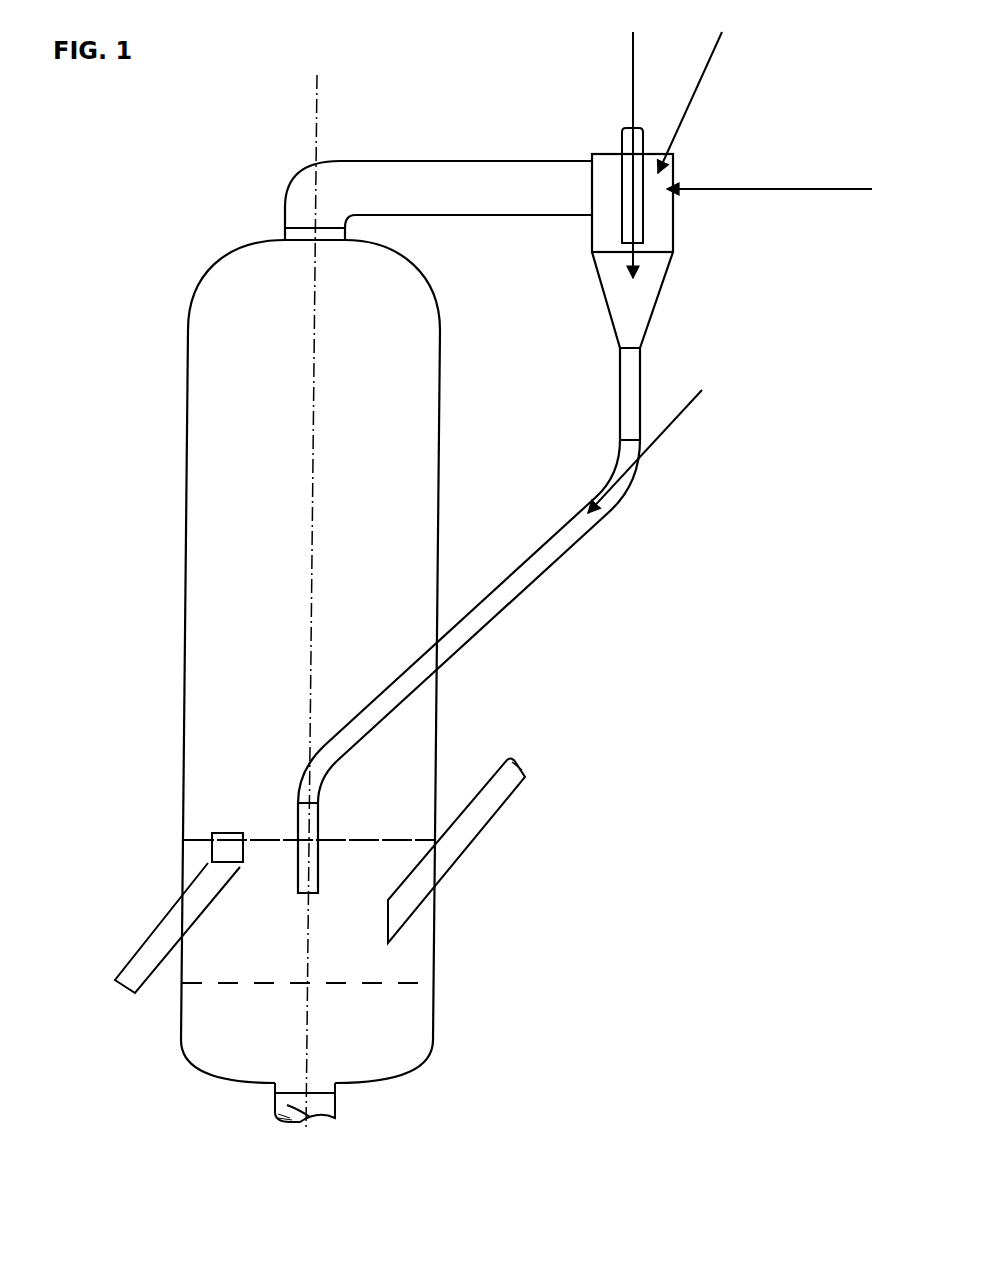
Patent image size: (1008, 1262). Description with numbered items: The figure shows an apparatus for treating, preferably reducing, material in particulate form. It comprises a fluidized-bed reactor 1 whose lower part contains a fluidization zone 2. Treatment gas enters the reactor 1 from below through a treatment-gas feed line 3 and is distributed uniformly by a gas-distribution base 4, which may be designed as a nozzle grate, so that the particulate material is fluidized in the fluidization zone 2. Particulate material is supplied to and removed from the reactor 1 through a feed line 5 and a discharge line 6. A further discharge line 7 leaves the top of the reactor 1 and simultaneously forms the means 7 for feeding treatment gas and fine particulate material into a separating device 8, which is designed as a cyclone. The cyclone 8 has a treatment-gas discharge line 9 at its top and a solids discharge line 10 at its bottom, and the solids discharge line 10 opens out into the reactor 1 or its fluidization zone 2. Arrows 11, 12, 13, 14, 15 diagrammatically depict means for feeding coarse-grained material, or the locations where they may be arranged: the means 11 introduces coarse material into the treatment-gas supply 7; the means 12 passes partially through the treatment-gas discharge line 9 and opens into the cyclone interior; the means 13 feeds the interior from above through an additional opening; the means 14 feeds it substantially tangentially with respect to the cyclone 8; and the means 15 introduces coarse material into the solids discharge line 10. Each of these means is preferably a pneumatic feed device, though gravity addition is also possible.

The fluidized-bed reactor 1 is at (200, 282).
The fluidization zone 2 is at (250, 926).
The treatment-gas feed line 3 is at (325, 1107).
The gas-distribution base 4 is at (387, 985).
The feed line for particulate material 5 is at (480, 815).
The discharge line for particulate material 6 is at (171, 913).
The discharge line 7 is at (402, 173).
The separating device 8 is at (603, 160).
The treatment-gas discharge line 9 is at (638, 173).
The solids discharge line 10 is at (633, 395).
The means for feeding coarse-grained material 11 is at (567, 180).
The means for feeding coarse-grained material 12 is at (632, 139).
The means for feeding coarse-grained material 13 is at (702, 80).
The means for feeding coarse-grained material 14 is at (769, 178).
The means for feeding coarse-grained material 15 is at (650, 448).